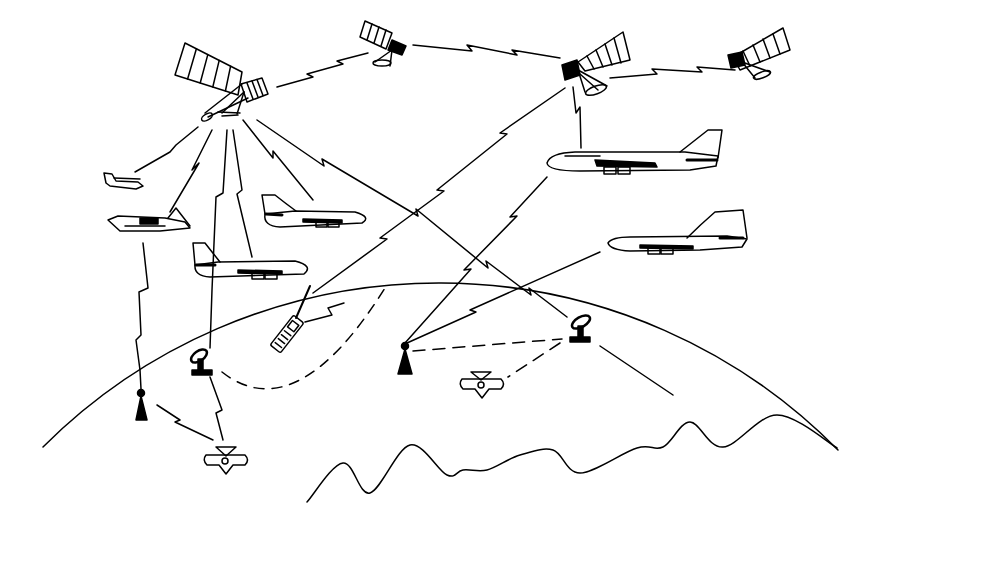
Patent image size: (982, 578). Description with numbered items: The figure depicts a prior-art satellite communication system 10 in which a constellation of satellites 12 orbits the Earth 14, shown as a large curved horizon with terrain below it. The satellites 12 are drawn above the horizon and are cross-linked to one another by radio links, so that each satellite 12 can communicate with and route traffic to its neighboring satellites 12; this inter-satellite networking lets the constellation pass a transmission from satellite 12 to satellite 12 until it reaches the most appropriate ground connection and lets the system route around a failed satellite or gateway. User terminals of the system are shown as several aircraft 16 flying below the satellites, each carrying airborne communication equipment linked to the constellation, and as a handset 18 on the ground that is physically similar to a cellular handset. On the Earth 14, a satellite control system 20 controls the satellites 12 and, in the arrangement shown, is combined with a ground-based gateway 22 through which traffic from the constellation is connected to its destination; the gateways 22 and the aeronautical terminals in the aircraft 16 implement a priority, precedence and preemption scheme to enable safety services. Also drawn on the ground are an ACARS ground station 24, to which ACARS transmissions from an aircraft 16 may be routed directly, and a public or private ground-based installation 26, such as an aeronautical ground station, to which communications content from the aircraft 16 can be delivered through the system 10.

The satellite communication system 10 is at (822, 272).
The satellite 12 is at (207, 63).
The Earth 14 is at (770, 388).
The aircraft 16 is at (688, 238).
The handset 18 is at (278, 333).
The satellite control system 20 is at (590, 328).
The gateway 22 is at (581, 327).
The ACARS ground station 24 is at (138, 405).
The public or private ground-based installation 26 is at (214, 466).